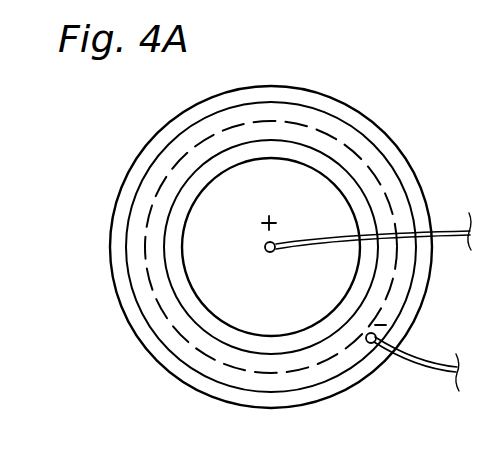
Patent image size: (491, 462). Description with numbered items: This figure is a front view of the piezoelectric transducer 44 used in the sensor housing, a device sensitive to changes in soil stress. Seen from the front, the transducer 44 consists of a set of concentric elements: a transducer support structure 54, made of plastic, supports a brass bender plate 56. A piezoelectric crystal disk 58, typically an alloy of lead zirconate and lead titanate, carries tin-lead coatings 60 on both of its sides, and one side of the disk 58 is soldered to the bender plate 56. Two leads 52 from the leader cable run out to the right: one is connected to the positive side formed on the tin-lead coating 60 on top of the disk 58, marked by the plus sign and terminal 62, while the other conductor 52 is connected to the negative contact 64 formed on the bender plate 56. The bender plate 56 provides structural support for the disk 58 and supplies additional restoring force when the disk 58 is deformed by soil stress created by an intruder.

The transducer 44 is at (262, 83).
The leads 52 is at (449, 228).
The transducer support structure 54 is at (345, 108).
The bender plate 56 is at (380, 170).
The piezoelectric crystal disk 58 is at (214, 167).
The tin-lead coatings 60 is at (209, 209).
The positive terminal 62 is at (266, 253).
The negative contact 64 is at (363, 347).